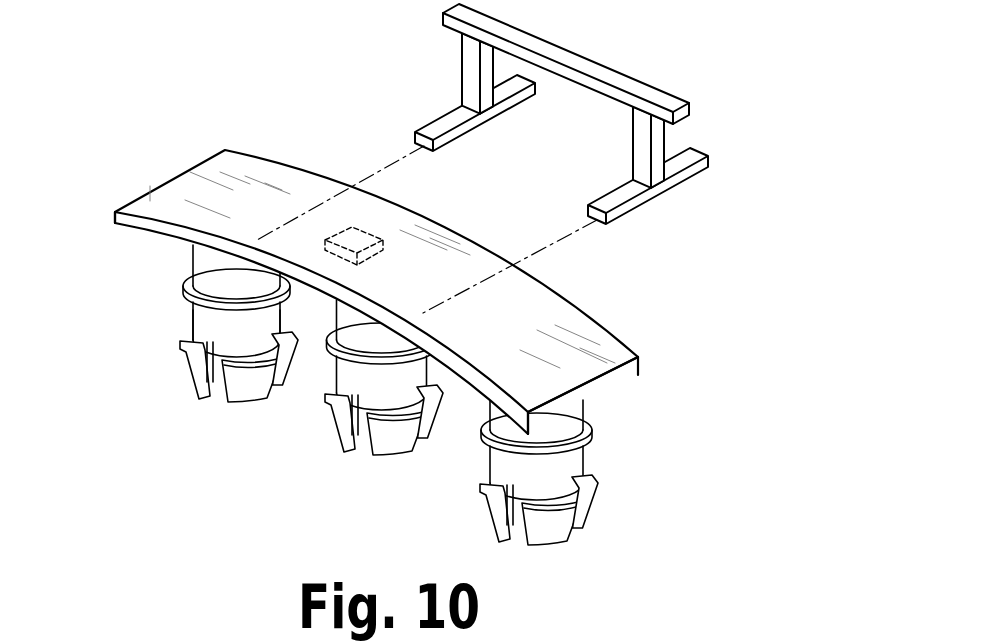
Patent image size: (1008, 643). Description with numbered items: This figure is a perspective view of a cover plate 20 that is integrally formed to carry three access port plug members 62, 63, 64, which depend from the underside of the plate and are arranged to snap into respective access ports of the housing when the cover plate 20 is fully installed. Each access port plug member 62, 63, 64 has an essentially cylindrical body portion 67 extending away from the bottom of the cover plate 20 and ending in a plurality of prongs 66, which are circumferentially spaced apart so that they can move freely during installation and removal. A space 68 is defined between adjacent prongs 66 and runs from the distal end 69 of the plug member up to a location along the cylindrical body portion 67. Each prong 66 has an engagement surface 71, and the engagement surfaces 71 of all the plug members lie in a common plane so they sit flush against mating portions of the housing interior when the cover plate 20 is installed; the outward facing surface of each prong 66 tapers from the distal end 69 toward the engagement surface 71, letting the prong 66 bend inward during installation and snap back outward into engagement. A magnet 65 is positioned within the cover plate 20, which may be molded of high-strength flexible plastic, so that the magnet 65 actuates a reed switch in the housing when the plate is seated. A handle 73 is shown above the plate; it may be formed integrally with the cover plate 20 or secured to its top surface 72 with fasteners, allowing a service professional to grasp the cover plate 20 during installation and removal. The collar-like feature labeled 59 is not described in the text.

The cover plate 20 is at (408, 292).
The top surface 72 is at (557, 303).
The handle 73 is at (605, 73).
The magnet 65 is at (366, 232).
The access port plug member 62 is at (170, 366).
The collar 59 is at (190, 288).
The cylindrical body portion 67 is at (190, 318).
The engagement surface 71 is at (150, 404).
The prong 66 is at (194, 378).
The space 68 is at (222, 398).
The distal end 69 is at (254, 402).
The access port plug member 63 is at (400, 368).
The access port plug member 64 is at (568, 460).